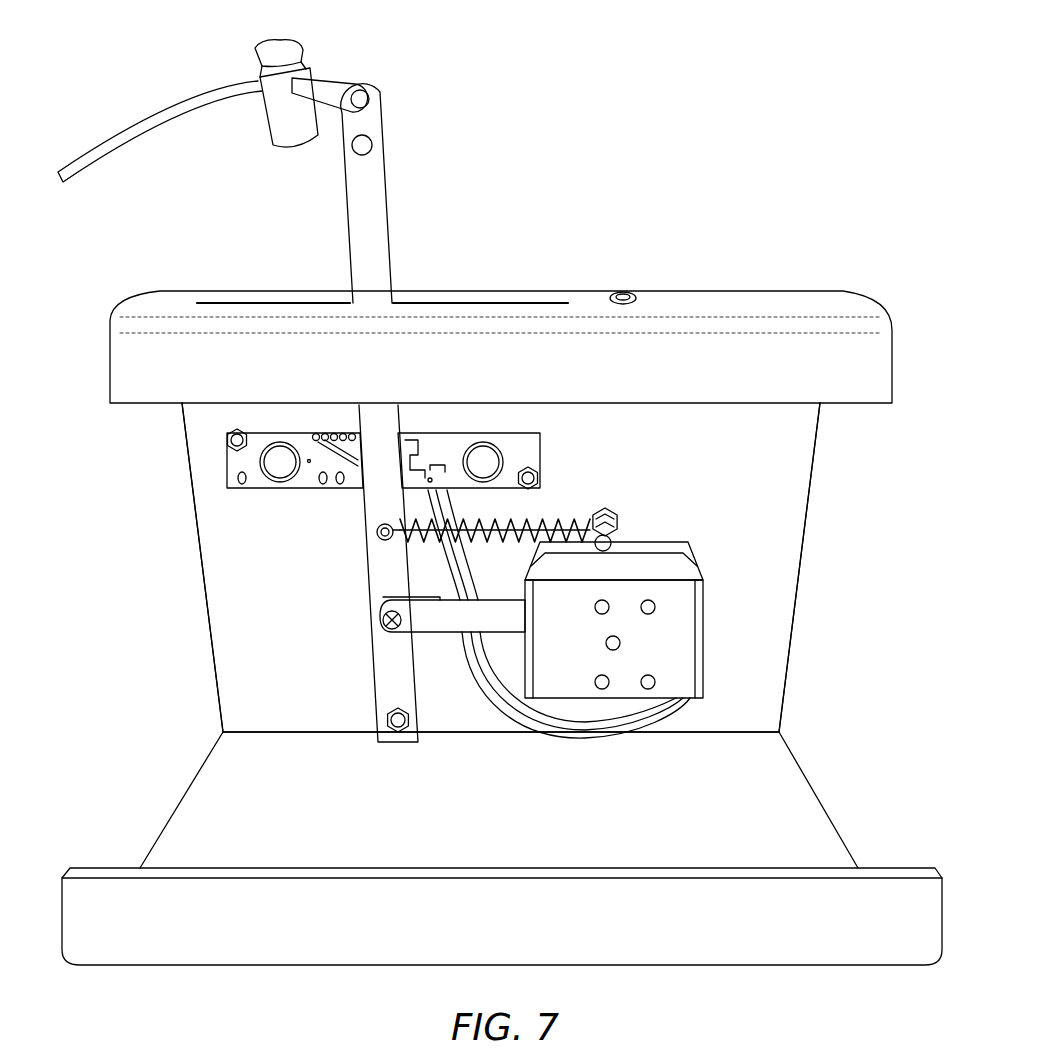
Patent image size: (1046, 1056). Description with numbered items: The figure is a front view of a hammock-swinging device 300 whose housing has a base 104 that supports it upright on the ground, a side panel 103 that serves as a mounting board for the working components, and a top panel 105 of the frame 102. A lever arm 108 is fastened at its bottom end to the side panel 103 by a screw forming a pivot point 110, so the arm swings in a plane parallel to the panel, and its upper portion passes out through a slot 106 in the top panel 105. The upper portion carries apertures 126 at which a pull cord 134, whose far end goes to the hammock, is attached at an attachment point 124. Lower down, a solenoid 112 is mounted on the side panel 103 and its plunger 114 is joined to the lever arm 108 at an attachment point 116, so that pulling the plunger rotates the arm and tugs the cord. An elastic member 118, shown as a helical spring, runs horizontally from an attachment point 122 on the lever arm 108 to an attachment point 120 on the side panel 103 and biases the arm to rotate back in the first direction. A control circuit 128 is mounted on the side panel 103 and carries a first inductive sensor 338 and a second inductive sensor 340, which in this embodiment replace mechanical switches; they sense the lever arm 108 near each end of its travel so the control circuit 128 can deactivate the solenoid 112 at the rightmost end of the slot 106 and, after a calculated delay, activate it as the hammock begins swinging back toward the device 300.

The device 300 is at (744, 102).
The frame 102 is at (805, 597).
The side panel 103 is at (750, 482).
The base 104 is at (525, 828).
The top panel 105 is at (792, 300).
The slot 106 is at (522, 300).
The lever arm 108 is at (375, 252).
The pivot point 110 is at (380, 740).
The solenoid 112 is at (680, 648).
The plunger 114 is at (430, 615).
The attachment point 116 is at (385, 617).
The elastic member 118 is at (545, 522).
The attachment point 120 is at (620, 518).
The attachment point 122 is at (383, 533).
The attachment point 124 is at (368, 100).
The apertures 126 is at (373, 139).
The control circuit 128 is at (228, 490).
The pull cord 134 is at (186, 103).
The first inductive sensor 338 is at (490, 460).
The second inductive sensor 340 is at (282, 470).